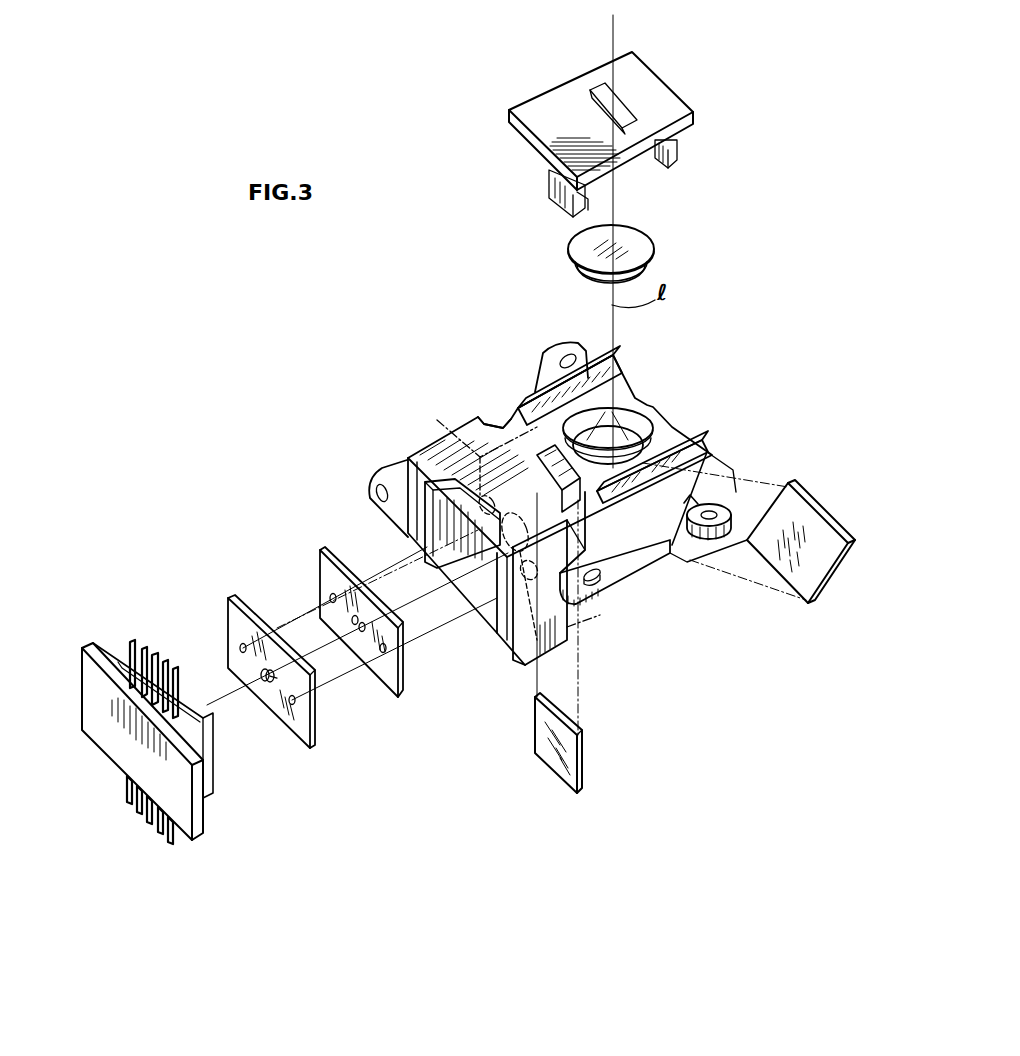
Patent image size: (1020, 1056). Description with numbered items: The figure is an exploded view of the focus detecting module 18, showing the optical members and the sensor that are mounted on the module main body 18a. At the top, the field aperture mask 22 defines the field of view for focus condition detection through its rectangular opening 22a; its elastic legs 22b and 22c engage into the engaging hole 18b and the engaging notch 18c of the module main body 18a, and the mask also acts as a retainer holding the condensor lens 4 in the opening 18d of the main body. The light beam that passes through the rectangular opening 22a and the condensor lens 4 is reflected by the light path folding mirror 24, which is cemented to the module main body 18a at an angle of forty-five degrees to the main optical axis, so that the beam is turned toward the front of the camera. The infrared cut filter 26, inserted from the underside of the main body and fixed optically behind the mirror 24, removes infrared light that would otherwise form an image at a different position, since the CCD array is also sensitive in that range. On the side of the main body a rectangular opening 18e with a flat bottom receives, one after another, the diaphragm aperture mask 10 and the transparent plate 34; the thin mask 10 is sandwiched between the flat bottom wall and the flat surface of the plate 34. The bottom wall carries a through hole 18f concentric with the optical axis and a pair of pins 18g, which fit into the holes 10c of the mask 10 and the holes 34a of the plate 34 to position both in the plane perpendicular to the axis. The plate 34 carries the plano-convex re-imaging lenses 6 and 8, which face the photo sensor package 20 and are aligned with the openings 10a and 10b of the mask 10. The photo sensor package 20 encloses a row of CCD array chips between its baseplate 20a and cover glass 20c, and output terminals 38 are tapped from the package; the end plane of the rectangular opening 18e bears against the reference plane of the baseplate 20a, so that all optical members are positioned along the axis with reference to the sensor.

The field aperture mask 22 is at (546, 108).
The rectangular opening 22a is at (613, 107).
The elastic leg 22b is at (556, 193).
The elastic leg 22c is at (672, 153).
The condensor lens 4 is at (640, 245).
The focus detecting module 18 is at (410, 446).
The module main body 18a is at (480, 414).
The engaging hole 18b is at (535, 437).
The engaging notch 18c is at (645, 440).
The opening 18d is at (628, 408).
The rectangular opening 18e is at (408, 549).
The through hole 18f is at (478, 597).
The pins 18g is at (452, 430).
The light path folding mirror 24 is at (808, 606).
The infrared cut filter 26 is at (578, 790).
The diaphragm aperture mask 10 is at (321, 553).
The opening 10a is at (352, 620).
The opening 10b is at (359, 628).
The holes 10c is at (330, 598).
The transparent plate 34 is at (244, 598).
The holes 34a is at (241, 646).
The re-imaging lens 6 is at (261, 674).
The re-imaging lens 8 is at (274, 680).
The photo sensor package 20 is at (105, 768).
The baseplate 20a is at (95, 652).
The cover glass 20c is at (210, 787).
The output terminals 38 is at (177, 673).